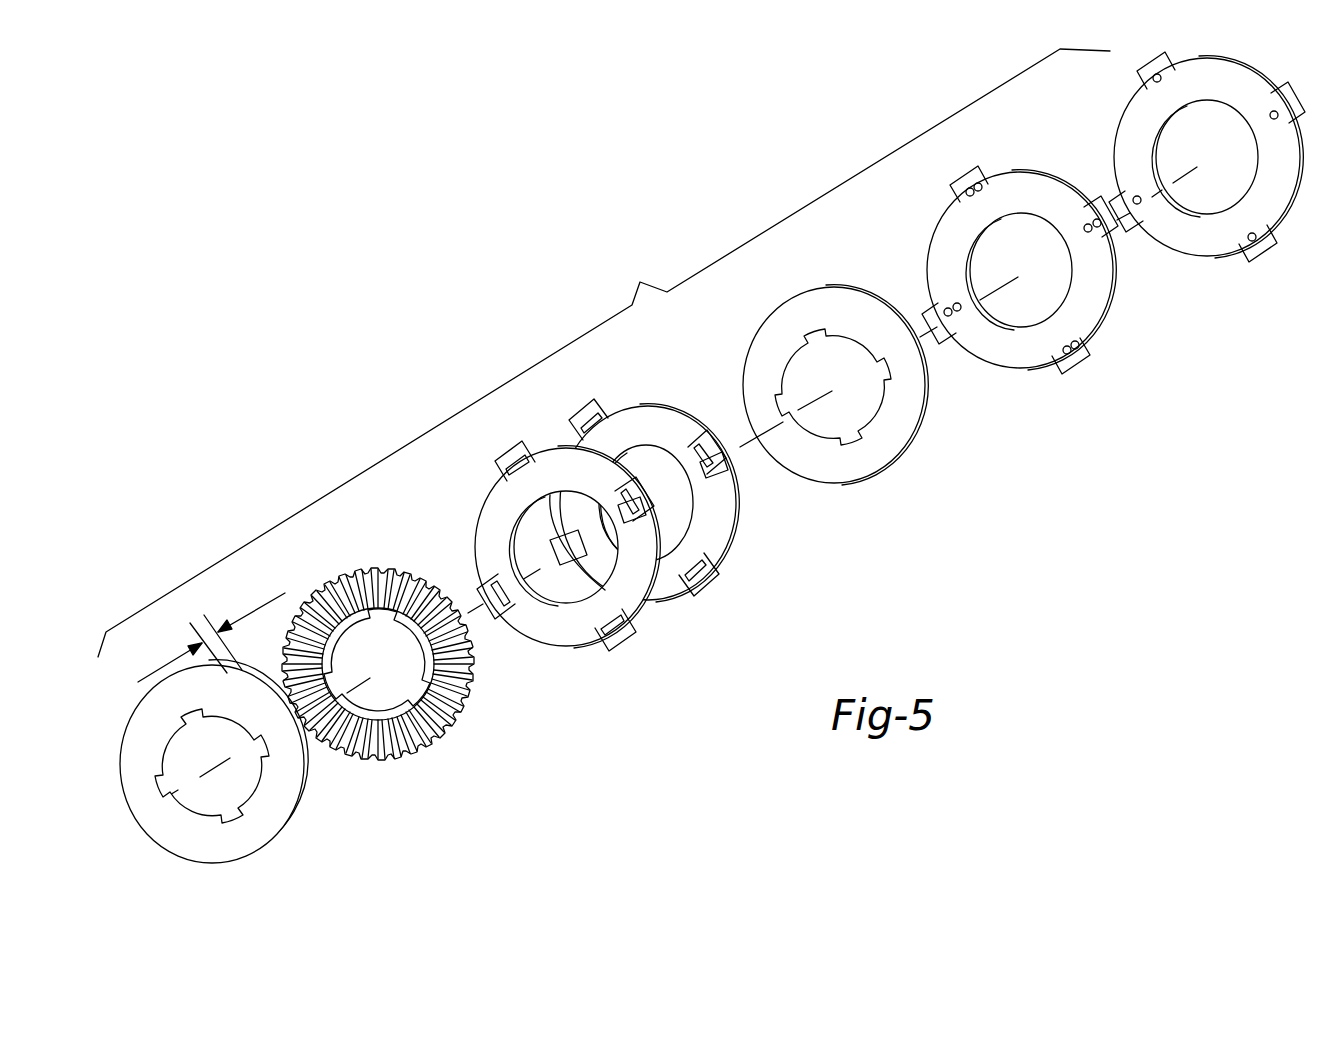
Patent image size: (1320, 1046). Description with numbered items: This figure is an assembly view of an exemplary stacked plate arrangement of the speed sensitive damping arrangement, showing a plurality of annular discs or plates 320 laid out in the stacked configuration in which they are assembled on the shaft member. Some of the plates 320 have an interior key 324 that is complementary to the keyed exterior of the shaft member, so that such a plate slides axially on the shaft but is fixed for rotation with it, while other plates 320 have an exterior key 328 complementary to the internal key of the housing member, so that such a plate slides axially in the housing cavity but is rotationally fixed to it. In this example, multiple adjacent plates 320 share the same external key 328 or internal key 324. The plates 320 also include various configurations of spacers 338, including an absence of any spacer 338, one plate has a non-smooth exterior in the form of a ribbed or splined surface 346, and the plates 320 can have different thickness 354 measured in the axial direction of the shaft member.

The plates 320 is at (604, 353).
The interior key 324 is at (213, 792).
The exterior key 328 is at (515, 450).
The spacers 338 is at (712, 468).
The ribbed or splined surface 346 is at (392, 747).
The thickness 354 is at (270, 605).